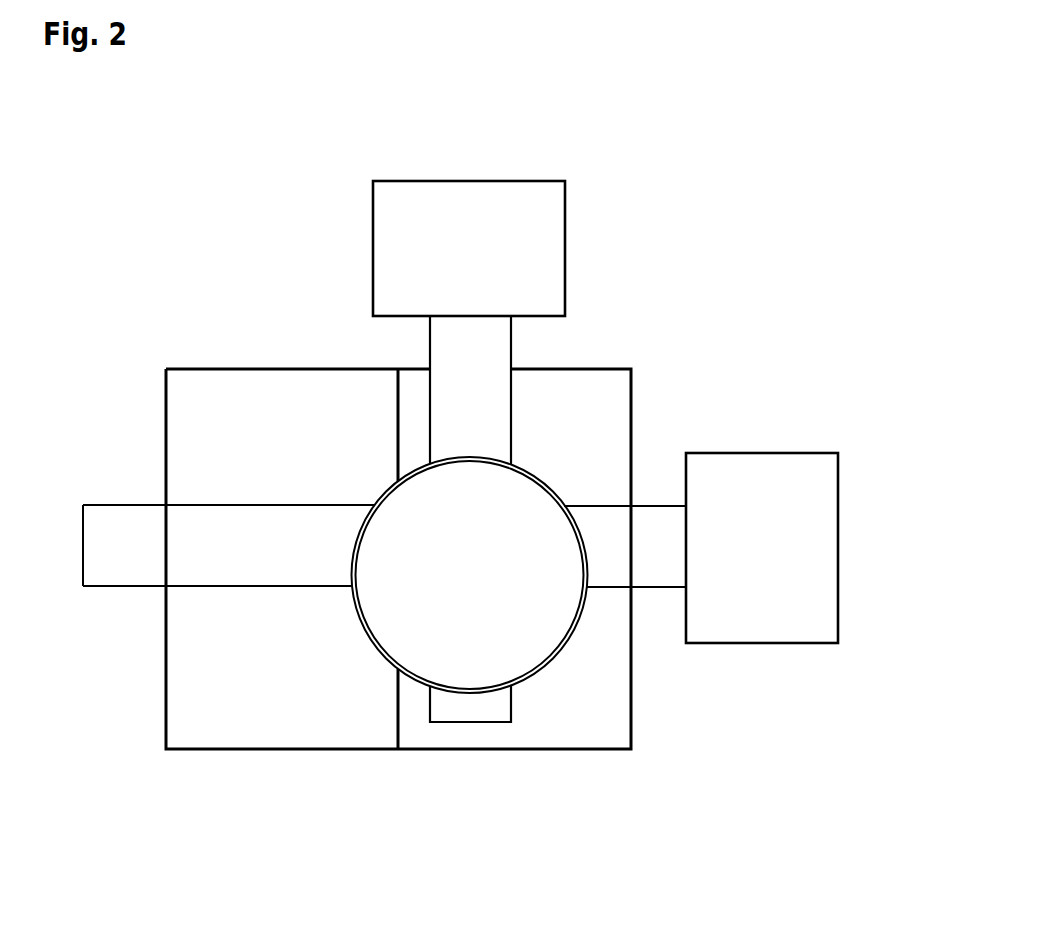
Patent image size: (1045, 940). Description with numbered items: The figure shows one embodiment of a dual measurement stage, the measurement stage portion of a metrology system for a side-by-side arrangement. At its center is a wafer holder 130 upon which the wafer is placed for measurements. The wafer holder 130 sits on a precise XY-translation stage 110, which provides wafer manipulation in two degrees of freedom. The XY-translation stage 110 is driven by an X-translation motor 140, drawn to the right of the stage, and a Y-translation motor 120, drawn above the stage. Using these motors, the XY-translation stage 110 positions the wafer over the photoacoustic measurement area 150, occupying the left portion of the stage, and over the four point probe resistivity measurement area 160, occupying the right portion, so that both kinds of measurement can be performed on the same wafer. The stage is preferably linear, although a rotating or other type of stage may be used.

The XY-translation stage 110 is at (500, 580).
The Y-translation motor 120 is at (373, 277).
The wafer holder 130 is at (470, 575).
The X-translation motor 140 is at (742, 643).
The photoacoustic measurement area 150 is at (286, 667).
The four point probe resistivity measurement area 160 is at (574, 715).